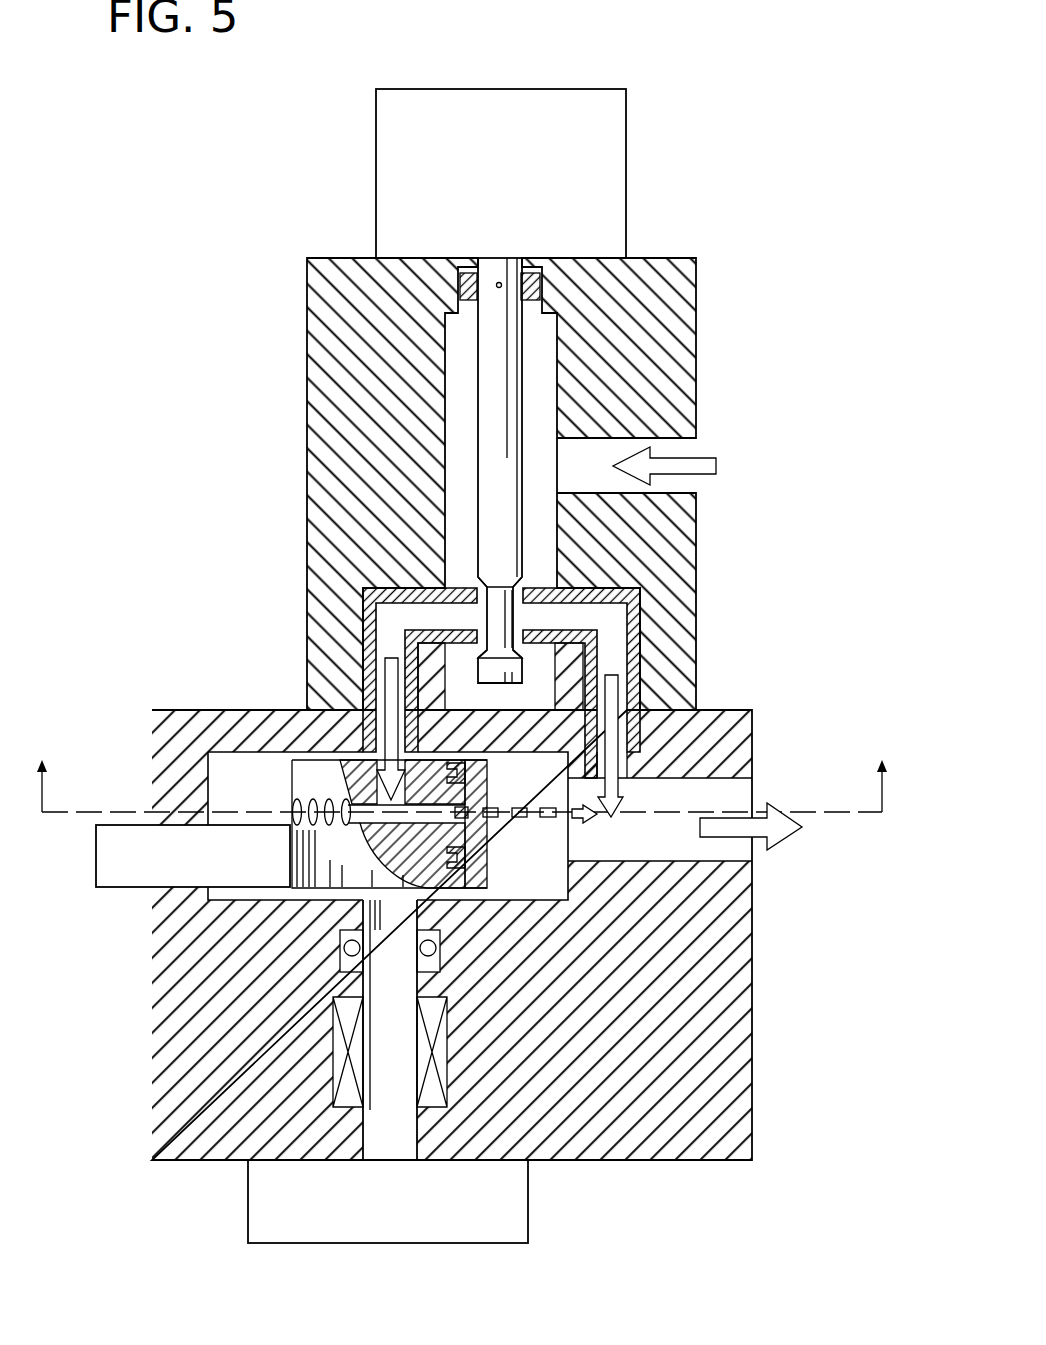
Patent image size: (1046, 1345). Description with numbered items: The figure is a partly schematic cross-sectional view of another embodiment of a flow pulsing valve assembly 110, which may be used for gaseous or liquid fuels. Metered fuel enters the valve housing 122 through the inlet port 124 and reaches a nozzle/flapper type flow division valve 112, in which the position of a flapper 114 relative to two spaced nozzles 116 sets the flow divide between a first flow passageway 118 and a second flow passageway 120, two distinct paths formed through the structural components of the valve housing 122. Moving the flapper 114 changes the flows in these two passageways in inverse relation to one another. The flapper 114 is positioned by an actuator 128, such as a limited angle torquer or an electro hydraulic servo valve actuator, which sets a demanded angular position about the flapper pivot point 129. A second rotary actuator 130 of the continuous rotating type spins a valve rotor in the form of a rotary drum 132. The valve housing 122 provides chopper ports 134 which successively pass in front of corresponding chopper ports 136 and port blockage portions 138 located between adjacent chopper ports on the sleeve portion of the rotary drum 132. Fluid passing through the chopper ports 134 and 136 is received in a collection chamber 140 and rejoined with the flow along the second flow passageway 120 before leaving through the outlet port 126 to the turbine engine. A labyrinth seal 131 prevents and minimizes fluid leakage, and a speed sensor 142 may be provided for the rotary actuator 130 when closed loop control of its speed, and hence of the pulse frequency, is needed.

The flow pulsing valve assembly 110 is at (160, 334).
The nozzle/flapper type flow division valve 112 is at (450, 518).
The flapper 114 is at (527, 586).
The nozzles 116 is at (457, 588).
The first flow passageway 118 is at (405, 690).
The second flow passageway 120 is at (617, 736).
The valve housing 122 is at (697, 312).
The inlet port 124 is at (688, 452).
The outlet port 126 is at (745, 853).
The actuator 128 is at (612, 122).
The flapper pivot point 129 is at (500, 281).
The second rotary actuator 130 is at (515, 1212).
The labyrinth seal 131 is at (492, 864).
The rotary drum 132 is at (330, 878).
The chopper ports 134 is at (462, 792).
The chopper ports 136 is at (490, 820).
The port blockage portions 138 is at (297, 838).
The collection chamber 140 is at (535, 890).
The speed sensor 142 is at (100, 858).